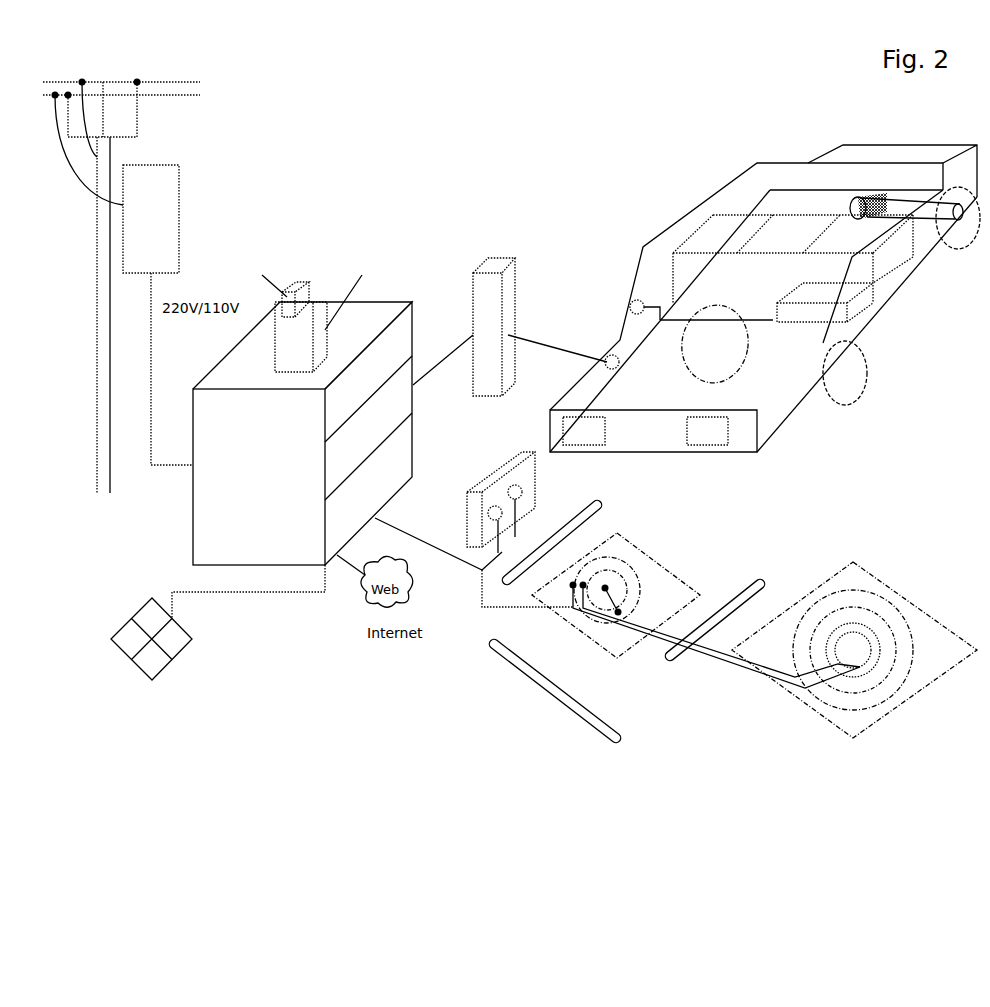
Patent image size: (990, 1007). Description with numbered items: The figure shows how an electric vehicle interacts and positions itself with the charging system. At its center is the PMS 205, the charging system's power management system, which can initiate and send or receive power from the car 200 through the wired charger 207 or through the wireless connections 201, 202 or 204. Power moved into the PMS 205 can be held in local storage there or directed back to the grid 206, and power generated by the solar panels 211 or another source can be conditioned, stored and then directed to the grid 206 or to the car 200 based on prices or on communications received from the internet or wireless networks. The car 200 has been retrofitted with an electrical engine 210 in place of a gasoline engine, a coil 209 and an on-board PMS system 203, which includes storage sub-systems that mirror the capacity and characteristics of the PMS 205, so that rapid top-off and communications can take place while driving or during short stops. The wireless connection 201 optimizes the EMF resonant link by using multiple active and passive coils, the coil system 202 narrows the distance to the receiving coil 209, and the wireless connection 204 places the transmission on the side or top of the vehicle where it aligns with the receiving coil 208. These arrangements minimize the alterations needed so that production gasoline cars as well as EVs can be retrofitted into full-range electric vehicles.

The car 200 is at (908, 145).
The wireless connection 201 is at (877, 577).
The coil system 202 is at (673, 560).
The PMS system 203 is at (887, 313).
The wireless connection 204 is at (482, 480).
The PMS 205 is at (193, 493).
The grid 206 is at (179, 218).
The charger 207 is at (517, 258).
The receiving coil 208 is at (608, 357).
The coil 209 is at (715, 344).
The electrical engine 210 is at (852, 205).
The solar panels 211 is at (131, 659).